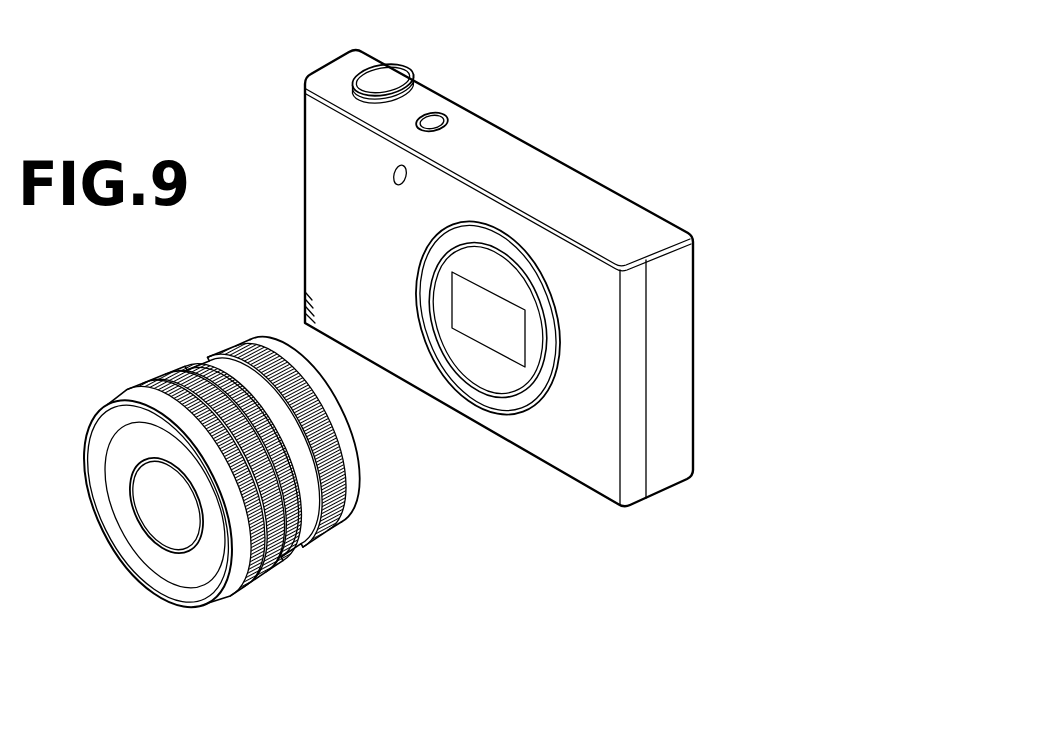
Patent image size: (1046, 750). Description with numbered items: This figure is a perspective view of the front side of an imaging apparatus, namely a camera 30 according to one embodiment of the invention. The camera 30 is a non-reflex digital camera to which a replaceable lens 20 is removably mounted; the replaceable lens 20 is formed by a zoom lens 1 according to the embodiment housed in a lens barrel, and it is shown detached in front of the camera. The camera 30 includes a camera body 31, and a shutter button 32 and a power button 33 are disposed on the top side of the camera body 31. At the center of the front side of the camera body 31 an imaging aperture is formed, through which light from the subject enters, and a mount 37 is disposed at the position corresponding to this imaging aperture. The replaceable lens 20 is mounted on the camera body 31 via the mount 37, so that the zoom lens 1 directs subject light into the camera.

The zoom lens 1 is at (207, 495).
The replaceable lens 20 is at (149, 408).
The camera 30 is at (531, 256).
The camera body 31 is at (683, 330).
The shutter button 32 is at (391, 72).
The power button 33 is at (433, 118).
The mount 37 is at (513, 393).